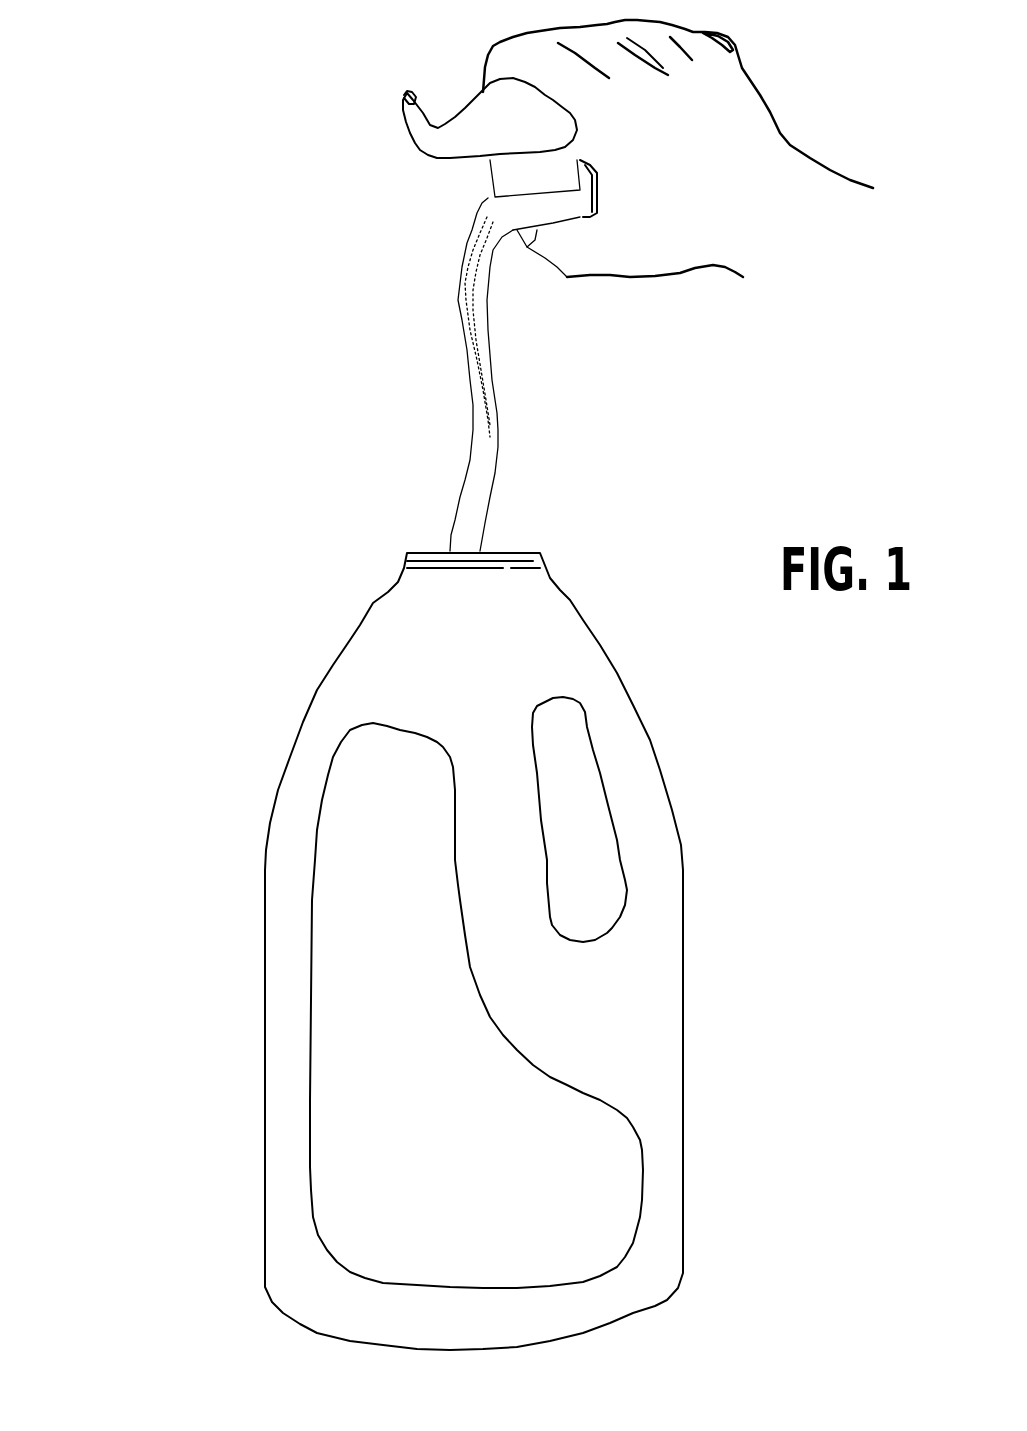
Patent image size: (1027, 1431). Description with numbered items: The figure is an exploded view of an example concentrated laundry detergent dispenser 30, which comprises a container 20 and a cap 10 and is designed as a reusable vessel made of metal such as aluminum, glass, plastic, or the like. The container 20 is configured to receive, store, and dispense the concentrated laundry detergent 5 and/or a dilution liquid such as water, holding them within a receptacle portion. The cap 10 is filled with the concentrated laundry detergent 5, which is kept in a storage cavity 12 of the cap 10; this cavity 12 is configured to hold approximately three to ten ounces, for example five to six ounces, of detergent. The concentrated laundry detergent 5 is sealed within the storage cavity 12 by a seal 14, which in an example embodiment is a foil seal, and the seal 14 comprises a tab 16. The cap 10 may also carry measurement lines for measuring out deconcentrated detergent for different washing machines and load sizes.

The concentrated laundry detergent 5 is at (520, 434).
The cap 10 is at (588, 198).
The storage cavity 12 is at (435, 207).
The seal 14 is at (403, 147).
The tab 16 is at (405, 92).
The container 20 is at (322, 685).
The concentrated laundry detergent dispenser 30 is at (148, 227).